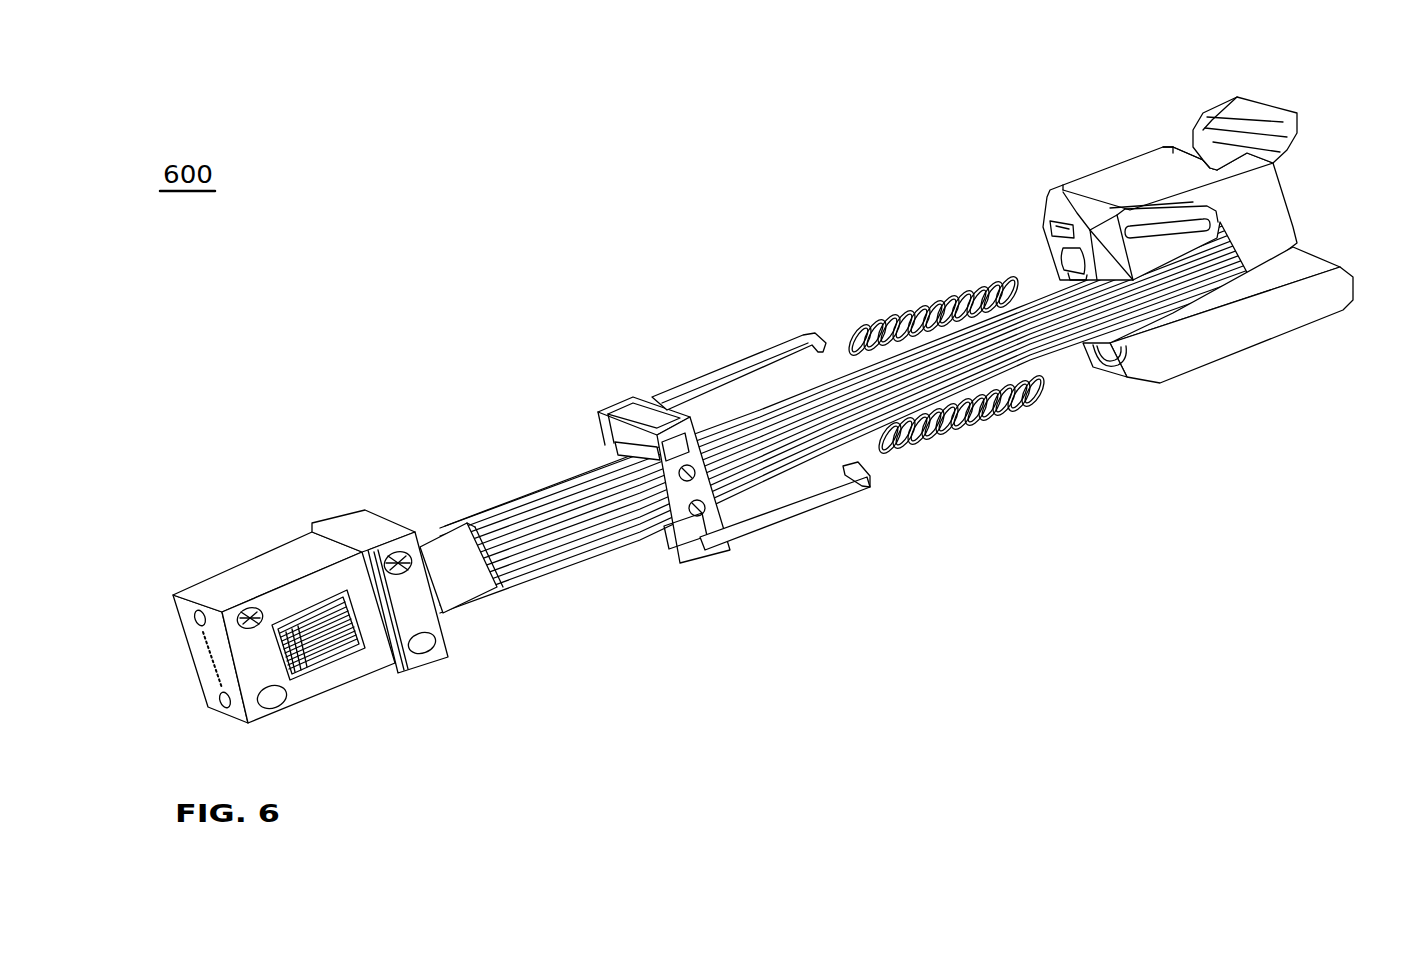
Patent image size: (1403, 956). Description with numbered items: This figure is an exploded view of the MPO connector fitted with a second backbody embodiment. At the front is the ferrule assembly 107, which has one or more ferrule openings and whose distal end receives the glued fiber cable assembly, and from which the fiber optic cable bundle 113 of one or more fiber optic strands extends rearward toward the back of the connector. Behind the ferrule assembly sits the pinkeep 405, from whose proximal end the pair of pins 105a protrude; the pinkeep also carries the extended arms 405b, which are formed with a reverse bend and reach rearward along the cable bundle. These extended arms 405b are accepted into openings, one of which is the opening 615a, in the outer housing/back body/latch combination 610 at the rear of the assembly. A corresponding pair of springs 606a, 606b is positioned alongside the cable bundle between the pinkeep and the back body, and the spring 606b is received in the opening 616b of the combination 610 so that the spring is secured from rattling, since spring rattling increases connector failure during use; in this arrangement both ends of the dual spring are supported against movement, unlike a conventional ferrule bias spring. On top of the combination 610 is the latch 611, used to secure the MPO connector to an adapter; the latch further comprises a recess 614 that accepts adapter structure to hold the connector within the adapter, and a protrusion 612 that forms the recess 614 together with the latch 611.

The ferrule assembly 107 is at (297, 556).
The pins 105a is at (545, 478).
The fiber optic cable bundle 113 is at (802, 447).
The pinkeep 405 is at (663, 373).
The extended arms 405b is at (764, 356).
The spring 606a is at (958, 298).
The spring 606b is at (990, 403).
The outer housing/back body/latch combination 610 is at (1100, 262).
The latch 611 is at (1264, 118).
The protrusion 612 is at (1165, 176).
The recess 614 is at (1204, 151).
The opening 615a is at (1068, 231).
The opening 616b is at (1107, 360).